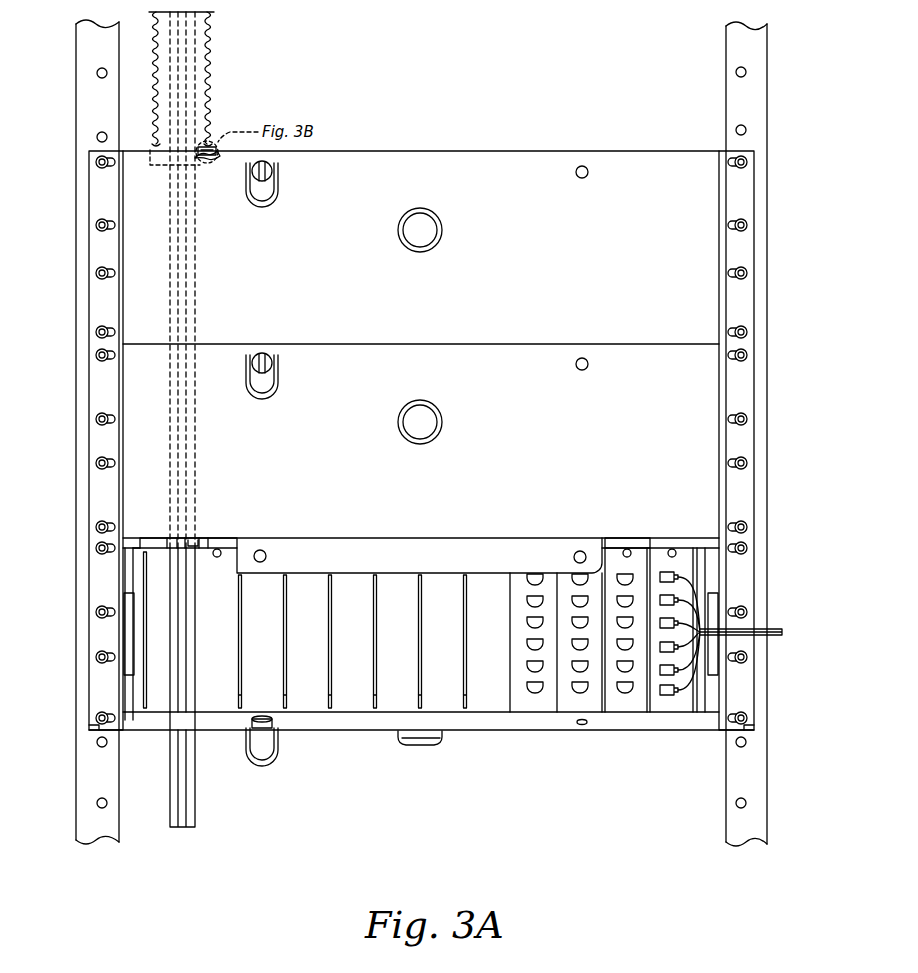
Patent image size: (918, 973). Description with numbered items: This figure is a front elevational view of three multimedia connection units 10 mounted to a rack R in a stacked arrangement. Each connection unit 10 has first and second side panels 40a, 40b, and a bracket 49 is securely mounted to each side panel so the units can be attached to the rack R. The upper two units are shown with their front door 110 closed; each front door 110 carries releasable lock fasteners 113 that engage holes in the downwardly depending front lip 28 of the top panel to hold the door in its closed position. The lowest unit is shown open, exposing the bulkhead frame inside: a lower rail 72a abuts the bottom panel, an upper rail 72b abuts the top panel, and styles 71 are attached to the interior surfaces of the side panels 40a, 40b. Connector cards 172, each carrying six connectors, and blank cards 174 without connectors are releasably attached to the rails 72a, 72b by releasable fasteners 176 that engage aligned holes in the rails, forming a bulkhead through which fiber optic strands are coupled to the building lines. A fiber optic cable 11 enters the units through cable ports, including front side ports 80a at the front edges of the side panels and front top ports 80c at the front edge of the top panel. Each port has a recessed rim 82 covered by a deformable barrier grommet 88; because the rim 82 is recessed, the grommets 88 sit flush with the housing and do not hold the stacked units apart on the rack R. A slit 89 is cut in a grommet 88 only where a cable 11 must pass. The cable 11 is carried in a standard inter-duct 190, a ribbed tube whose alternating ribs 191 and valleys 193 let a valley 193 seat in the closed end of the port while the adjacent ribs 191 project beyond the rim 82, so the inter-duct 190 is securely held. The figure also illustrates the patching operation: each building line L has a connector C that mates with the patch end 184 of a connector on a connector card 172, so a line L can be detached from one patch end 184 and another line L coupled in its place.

The multimedia connection unit 10 is at (425, 142).
The fiber optic cable 11 is at (188, 782).
The front lip 28 is at (393, 570).
The first side panel 40a is at (100, 742).
The second side panel 40b is at (745, 742).
The bracket 49 is at (97, 180).
The style 71 is at (127, 690).
The lower rail 72a is at (140, 720).
The upper rail 72b is at (130, 548).
The front side port 80a is at (118, 672).
The front top port 80c is at (157, 537).
The recessed rim 82 is at (138, 538).
The barrier grommet 88 is at (222, 538).
The slit 89 is at (195, 538).
The front door 110 is at (544, 227).
The releasable lock fastener 113 is at (275, 163).
The connector card 172 is at (572, 703).
The blank card 174 is at (330, 712).
The releasable fastener 176 is at (170, 549).
The patch end 184 is at (625, 700).
The inter-duct 190 is at (213, 24).
The rib 191 is at (210, 90).
The valley 193 is at (211, 95).
The rack R is at (85, 58).
The communication line L is at (782, 633).
The connector C is at (668, 700).